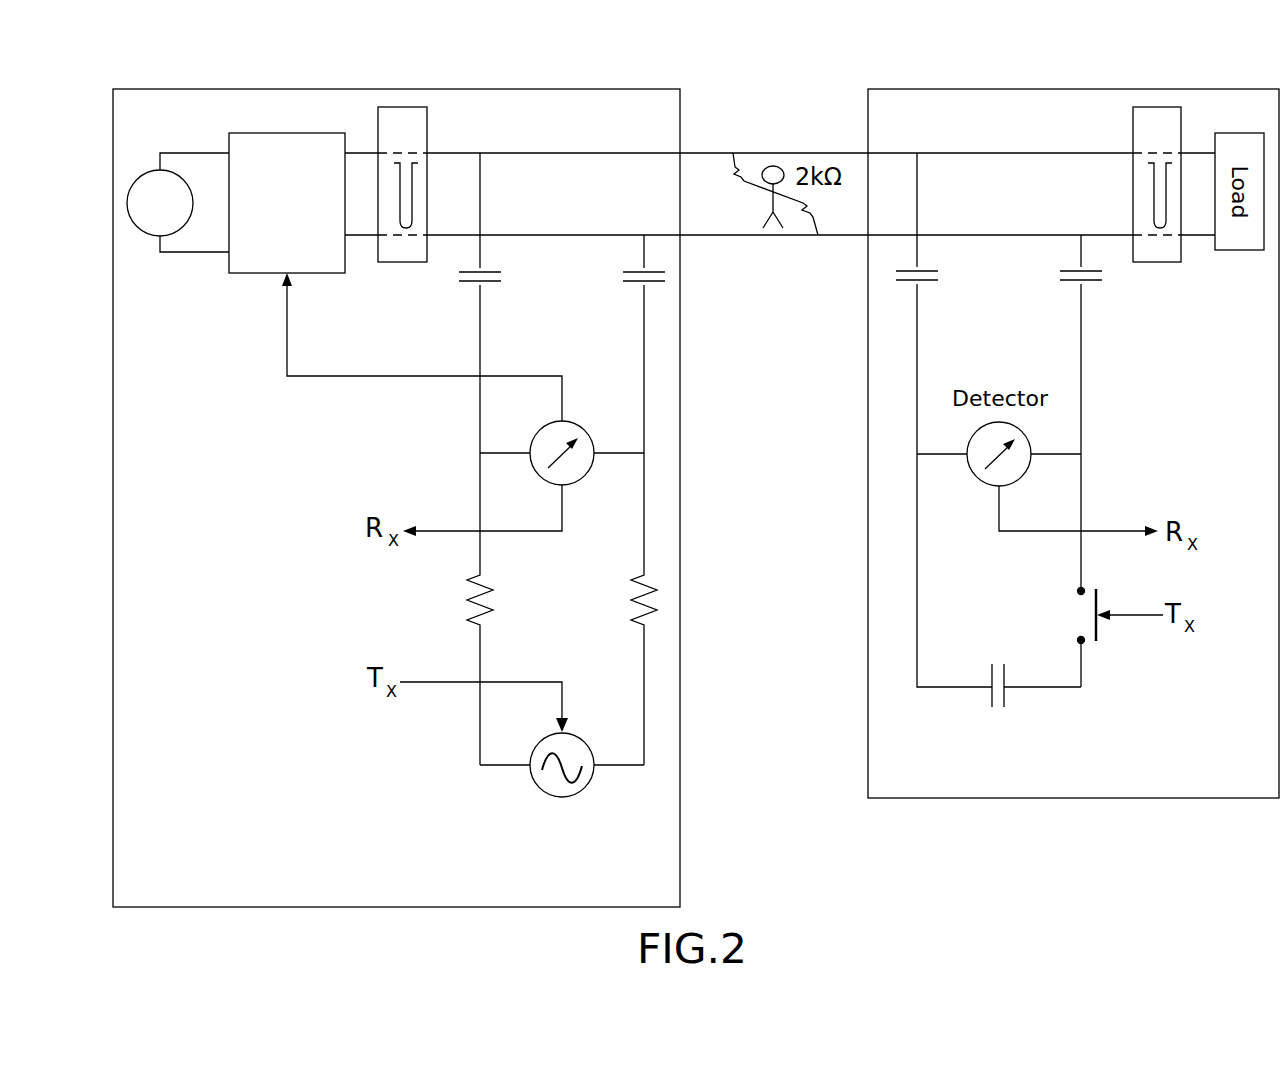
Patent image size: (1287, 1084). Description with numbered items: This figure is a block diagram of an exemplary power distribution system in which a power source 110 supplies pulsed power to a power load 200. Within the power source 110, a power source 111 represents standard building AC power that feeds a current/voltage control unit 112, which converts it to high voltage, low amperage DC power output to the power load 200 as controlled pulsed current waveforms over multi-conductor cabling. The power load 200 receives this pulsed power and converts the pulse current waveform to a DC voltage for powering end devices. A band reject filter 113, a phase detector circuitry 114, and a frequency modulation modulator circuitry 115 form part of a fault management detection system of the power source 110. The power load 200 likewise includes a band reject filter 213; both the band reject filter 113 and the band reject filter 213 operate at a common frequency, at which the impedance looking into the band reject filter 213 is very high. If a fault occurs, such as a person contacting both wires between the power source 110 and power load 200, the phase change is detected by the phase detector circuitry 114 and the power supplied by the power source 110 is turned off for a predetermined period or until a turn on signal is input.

The power source 110 is at (135, 89).
The power source 111 is at (127, 210).
The current/voltage control unit 112 is at (253, 133).
The band reject filter 113 is at (397, 107).
The phase detector circuitry 114 is at (594, 440).
The frequency modulation (FM) modulator circuitry 115 is at (594, 750).
The power load 200 is at (890, 89).
The band reject filter 213 is at (1150, 107).